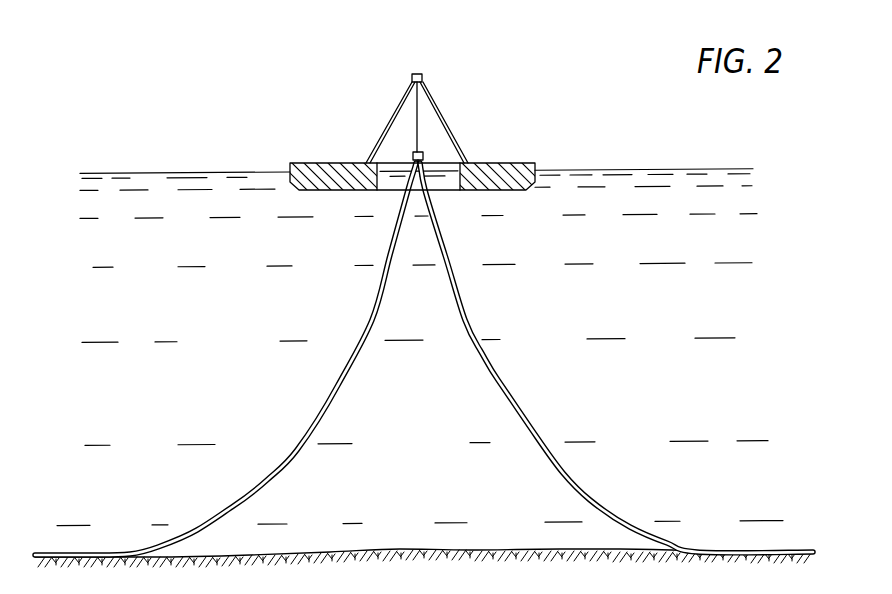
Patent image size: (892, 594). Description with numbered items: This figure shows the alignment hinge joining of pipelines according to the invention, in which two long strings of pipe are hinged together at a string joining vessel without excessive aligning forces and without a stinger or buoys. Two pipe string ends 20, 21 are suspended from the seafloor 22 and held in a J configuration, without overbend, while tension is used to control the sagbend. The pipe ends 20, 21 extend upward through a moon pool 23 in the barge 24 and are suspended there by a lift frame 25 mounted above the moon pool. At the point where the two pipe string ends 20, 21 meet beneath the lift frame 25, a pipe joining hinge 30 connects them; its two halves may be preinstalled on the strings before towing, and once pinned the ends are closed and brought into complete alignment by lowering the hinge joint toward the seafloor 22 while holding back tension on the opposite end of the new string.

The pipe string end 20 is at (340, 383).
The pipe string end 21 is at (498, 380).
The seafloor 22 is at (396, 550).
The moon pool 23 is at (390, 164).
The barge 24 is at (522, 167).
The lift frame 25 is at (421, 74).
The pipe joining hinge 30 is at (425, 150).